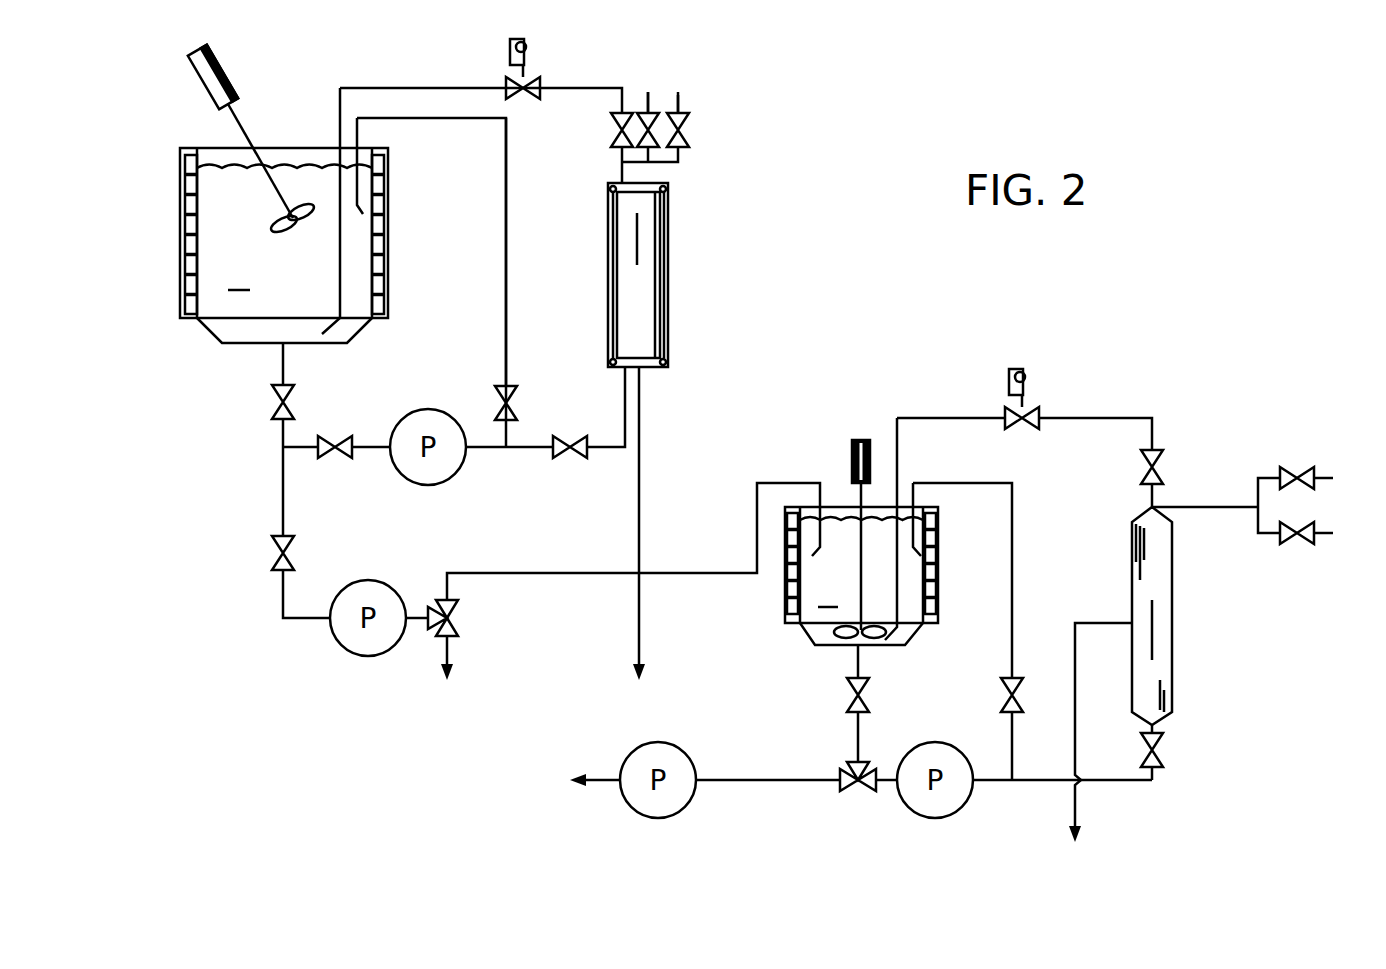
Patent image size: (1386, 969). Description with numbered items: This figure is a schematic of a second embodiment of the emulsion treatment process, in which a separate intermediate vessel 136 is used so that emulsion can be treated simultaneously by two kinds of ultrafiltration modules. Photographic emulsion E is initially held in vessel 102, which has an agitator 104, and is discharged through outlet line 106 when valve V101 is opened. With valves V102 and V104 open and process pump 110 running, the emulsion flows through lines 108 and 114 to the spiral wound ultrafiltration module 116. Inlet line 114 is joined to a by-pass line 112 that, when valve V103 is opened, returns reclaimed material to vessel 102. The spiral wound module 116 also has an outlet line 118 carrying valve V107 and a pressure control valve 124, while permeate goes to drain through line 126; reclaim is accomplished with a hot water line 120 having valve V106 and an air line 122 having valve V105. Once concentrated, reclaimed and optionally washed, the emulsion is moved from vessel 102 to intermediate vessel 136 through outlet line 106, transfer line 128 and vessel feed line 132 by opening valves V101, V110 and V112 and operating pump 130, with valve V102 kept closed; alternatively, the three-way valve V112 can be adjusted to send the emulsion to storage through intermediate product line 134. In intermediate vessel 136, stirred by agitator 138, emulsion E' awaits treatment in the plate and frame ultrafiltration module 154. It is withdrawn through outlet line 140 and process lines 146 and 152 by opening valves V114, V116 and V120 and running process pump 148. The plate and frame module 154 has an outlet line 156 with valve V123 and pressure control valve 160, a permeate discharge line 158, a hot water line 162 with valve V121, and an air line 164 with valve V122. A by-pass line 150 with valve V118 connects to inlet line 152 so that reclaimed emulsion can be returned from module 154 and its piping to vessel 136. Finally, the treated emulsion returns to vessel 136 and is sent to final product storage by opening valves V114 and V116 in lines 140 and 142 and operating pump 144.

The vessel 102 is at (420, 285).
The agitator 104 is at (240, 119).
The outlet line 106 is at (285, 366).
The line 108 is at (370, 447).
The process pump 110 is at (430, 412).
The by-pass line 112 is at (508, 278).
The inlet line 114 is at (526, 450).
The spiral wound ultrafiltration module 116 is at (670, 278).
The outlet line 118 is at (616, 158).
The hot water line 120 is at (646, 100).
The air line 122 is at (690, 97).
The pressure control valve 124 is at (531, 50).
The line 126 is at (641, 513).
The transfer line 128 is at (286, 516).
The pump 130 is at (376, 590).
The vessel feed line 132 is at (585, 573).
The intermediate product line 134 is at (455, 650).
The intermediate vessel 136 is at (948, 578).
The agitator 138 is at (856, 492).
The outlet line 140 is at (862, 666).
The line 142 is at (752, 790).
The pump 144 is at (684, 760).
The process line 146 is at (990, 785).
The process pump 148 is at (947, 760).
The by-pass line 150 is at (1014, 608).
The inlet line 152 is at (1116, 785).
The plate and frame ultrafiltration module 154 is at (1172, 636).
The outlet line 156 is at (1154, 496).
The permeate discharge line 158 is at (1076, 742).
The pressure control valve 160 is at (1027, 370).
The hot water line 162 is at (1320, 483).
The air line 164 is at (1322, 542).
The valve V101 is at (290, 400).
The valve V102 is at (336, 460).
The valve V103 is at (516, 406).
The valve V104 is at (574, 458).
The valve V105 is at (692, 138).
The valve V106 is at (650, 112).
The valve V107 is at (612, 128).
The valve V110 is at (292, 557).
The three-way valve V112 is at (460, 616).
The valve V114 is at (866, 696).
The valve V116 is at (875, 795).
The valve V118 is at (1020, 690).
The valve V120 is at (1162, 745).
The valve V121 is at (1287, 468).
The valve V122 is at (1278, 540).
The valve V123 is at (1160, 462).